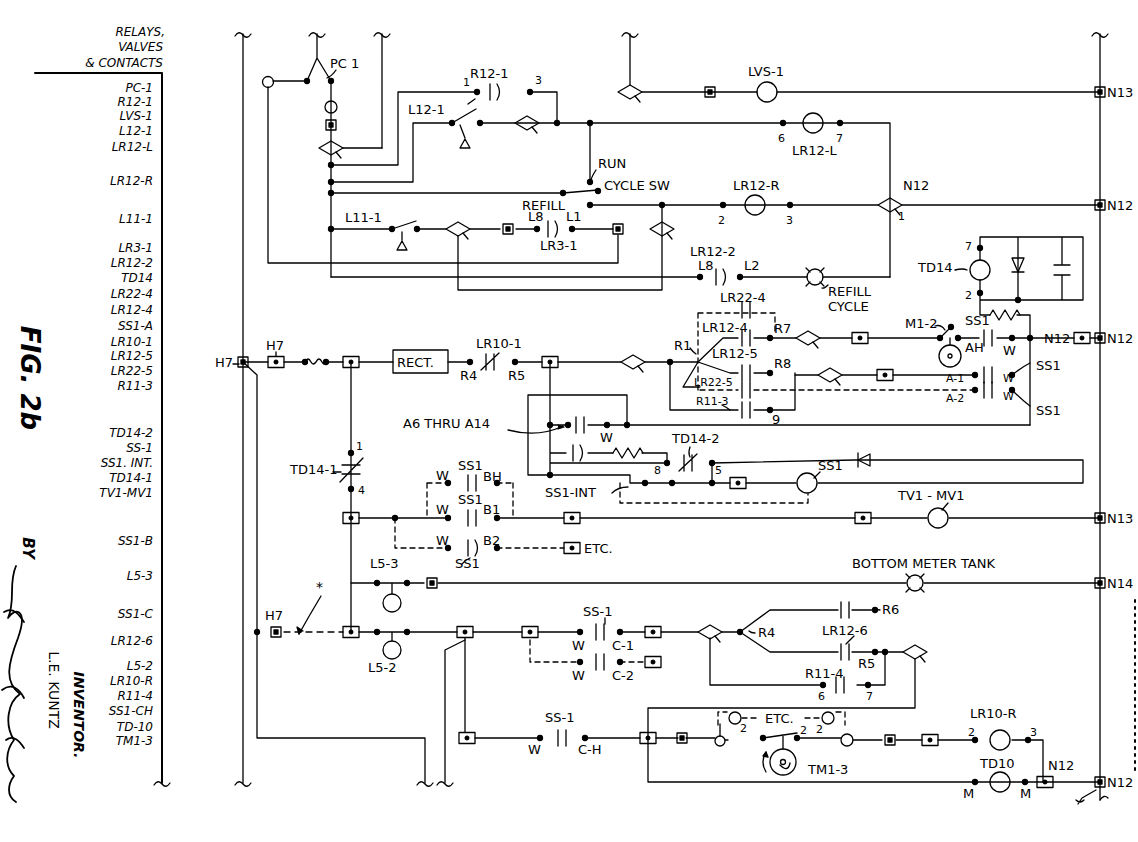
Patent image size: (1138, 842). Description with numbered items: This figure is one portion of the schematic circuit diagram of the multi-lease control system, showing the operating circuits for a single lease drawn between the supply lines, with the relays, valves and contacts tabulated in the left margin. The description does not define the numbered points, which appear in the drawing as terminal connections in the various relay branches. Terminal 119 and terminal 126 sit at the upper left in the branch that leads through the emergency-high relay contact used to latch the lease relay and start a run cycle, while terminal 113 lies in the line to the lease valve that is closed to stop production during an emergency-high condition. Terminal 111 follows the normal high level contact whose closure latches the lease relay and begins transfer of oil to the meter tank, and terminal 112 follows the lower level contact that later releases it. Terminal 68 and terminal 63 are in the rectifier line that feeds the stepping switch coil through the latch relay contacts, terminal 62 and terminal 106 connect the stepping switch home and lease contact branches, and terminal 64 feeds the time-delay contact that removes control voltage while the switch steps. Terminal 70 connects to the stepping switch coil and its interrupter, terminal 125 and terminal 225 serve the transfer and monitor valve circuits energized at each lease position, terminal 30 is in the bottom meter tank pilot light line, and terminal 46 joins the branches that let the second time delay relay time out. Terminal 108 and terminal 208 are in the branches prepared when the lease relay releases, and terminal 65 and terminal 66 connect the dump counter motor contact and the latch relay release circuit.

The terminal 119 is at (270, 82).
The terminal 126 is at (322, 148).
The terminal 113 is at (624, 92).
The terminal 111 is at (539, 129).
The terminal 112 is at (507, 228).
The terminal 68 is at (351, 356).
The terminal 63 is at (556, 356).
The terminal 62 is at (812, 327).
The terminal 106 is at (826, 367).
The terminal 64 is at (343, 520).
The terminal 70 is at (740, 483).
The terminal 125 is at (580, 524).
The terminal 225 is at (568, 556).
The terminal 30 is at (436, 580).
The terminal 46 is at (474, 629).
The terminal 108 is at (666, 628).
The terminal 208 is at (661, 662).
The terminal 65 is at (921, 653).
The terminal 66 is at (850, 738).